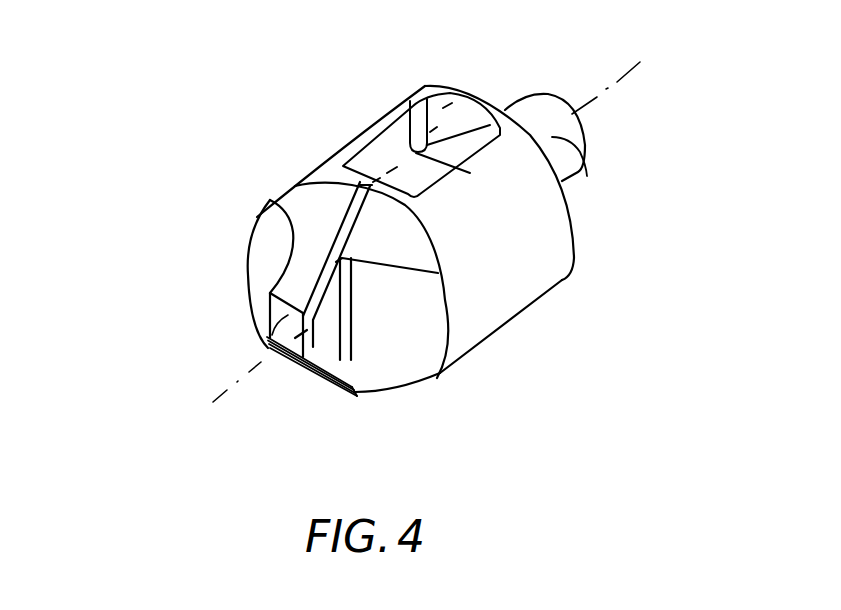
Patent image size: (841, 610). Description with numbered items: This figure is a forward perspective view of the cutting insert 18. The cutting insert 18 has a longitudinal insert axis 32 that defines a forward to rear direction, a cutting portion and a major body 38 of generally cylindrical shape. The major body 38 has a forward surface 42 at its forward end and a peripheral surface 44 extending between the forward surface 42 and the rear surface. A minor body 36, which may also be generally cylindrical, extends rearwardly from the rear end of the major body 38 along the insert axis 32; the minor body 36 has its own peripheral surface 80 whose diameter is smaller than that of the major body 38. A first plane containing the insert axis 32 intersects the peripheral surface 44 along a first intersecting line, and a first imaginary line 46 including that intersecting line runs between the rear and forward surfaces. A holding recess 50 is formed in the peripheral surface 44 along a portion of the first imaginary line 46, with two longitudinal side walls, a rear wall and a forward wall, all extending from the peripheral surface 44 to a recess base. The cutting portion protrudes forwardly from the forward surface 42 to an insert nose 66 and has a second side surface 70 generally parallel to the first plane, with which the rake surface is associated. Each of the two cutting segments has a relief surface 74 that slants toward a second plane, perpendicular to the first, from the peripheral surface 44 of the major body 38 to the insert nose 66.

The cutting insert 18 is at (165, 70).
The longitudinal insert axis 32 is at (622, 82).
The minor body 36 is at (568, 175).
The major body 38 is at (504, 318).
The forward surface 42 is at (272, 240).
The peripheral surface 44 is at (522, 242).
The first imaginary line 46 is at (440, 110).
The holding recess 50 is at (429, 94).
The insert nose 66 is at (266, 352).
The second side surface 70 is at (323, 335).
The relief surface 74 is at (301, 214).
The peripheral surface of minor body 80 is at (587, 176).